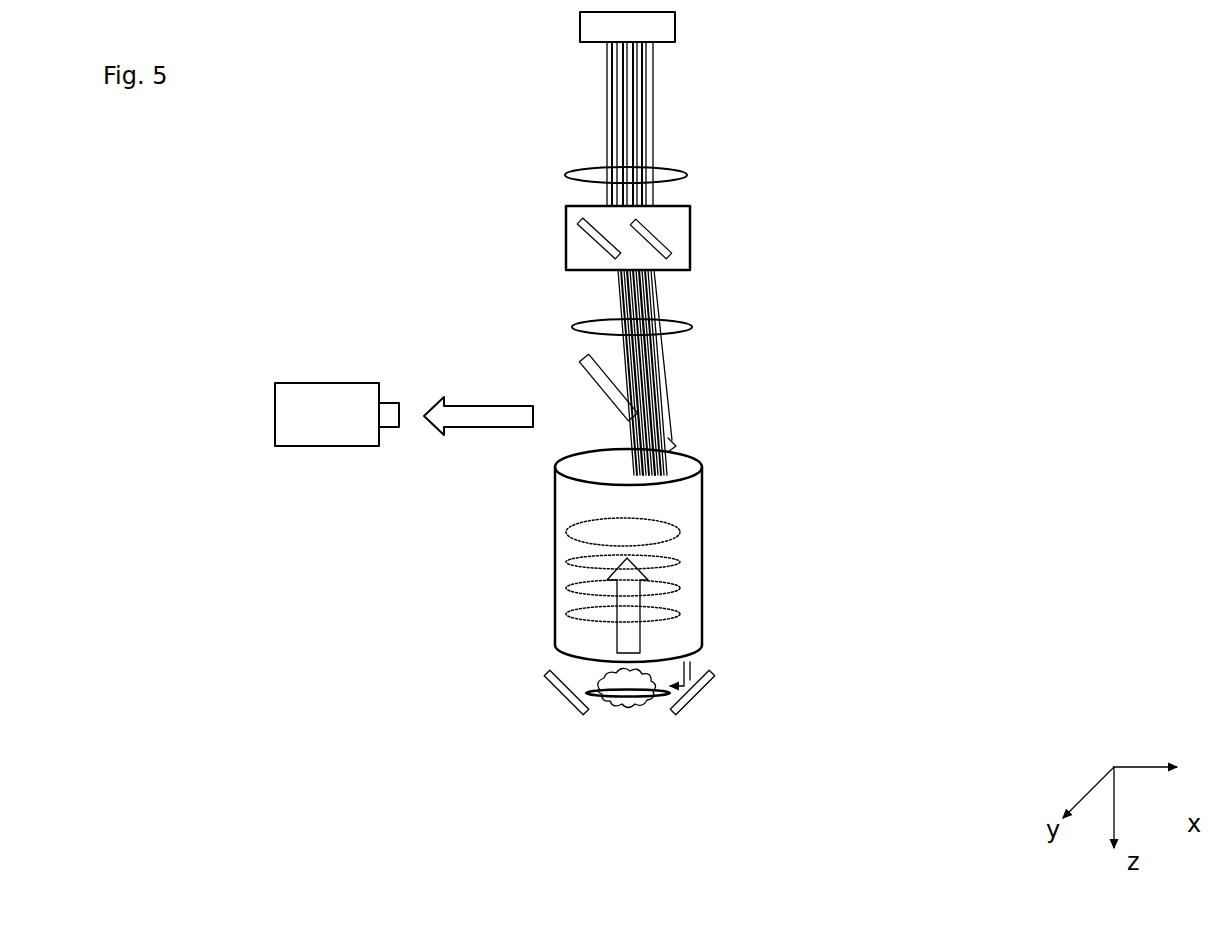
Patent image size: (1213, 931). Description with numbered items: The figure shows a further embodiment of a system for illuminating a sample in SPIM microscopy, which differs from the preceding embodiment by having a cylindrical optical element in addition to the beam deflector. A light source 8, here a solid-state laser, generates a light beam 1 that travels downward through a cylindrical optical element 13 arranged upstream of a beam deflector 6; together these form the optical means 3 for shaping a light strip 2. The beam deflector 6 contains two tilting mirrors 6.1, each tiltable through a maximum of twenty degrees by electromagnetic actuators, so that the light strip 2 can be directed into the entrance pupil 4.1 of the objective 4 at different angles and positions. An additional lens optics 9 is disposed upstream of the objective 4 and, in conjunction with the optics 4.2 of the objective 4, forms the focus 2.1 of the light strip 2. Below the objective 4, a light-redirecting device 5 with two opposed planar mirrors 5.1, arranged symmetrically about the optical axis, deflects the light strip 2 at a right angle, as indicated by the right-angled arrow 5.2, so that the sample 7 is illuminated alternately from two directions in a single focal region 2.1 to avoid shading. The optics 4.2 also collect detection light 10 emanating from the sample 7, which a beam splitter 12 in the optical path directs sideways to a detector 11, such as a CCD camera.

The light beam 1 is at (600, 121).
The light strip 2 is at (680, 383).
The focus 2.1 is at (640, 695).
The optical means 3 is at (777, 202).
The objective 4 is at (592, 544).
The entrance pupil 4.1 is at (682, 463).
The optics 4.2 is at (570, 603).
The light-redirecting device 5 is at (611, 723).
The planar mirror 5.1 is at (570, 682).
The right-angled arrow 5.2 is at (690, 690).
The beam deflector 6 is at (577, 248).
The tilting mirror 6.1 is at (578, 219).
The sample 7 is at (618, 702).
The light source 8 is at (612, 24).
The additional lens optics 9 is at (691, 327).
The detection light 10 is at (472, 413).
The detector 11 is at (296, 414).
The beam splitter 12 is at (584, 358).
The cylindrical optical element 13 is at (687, 177).